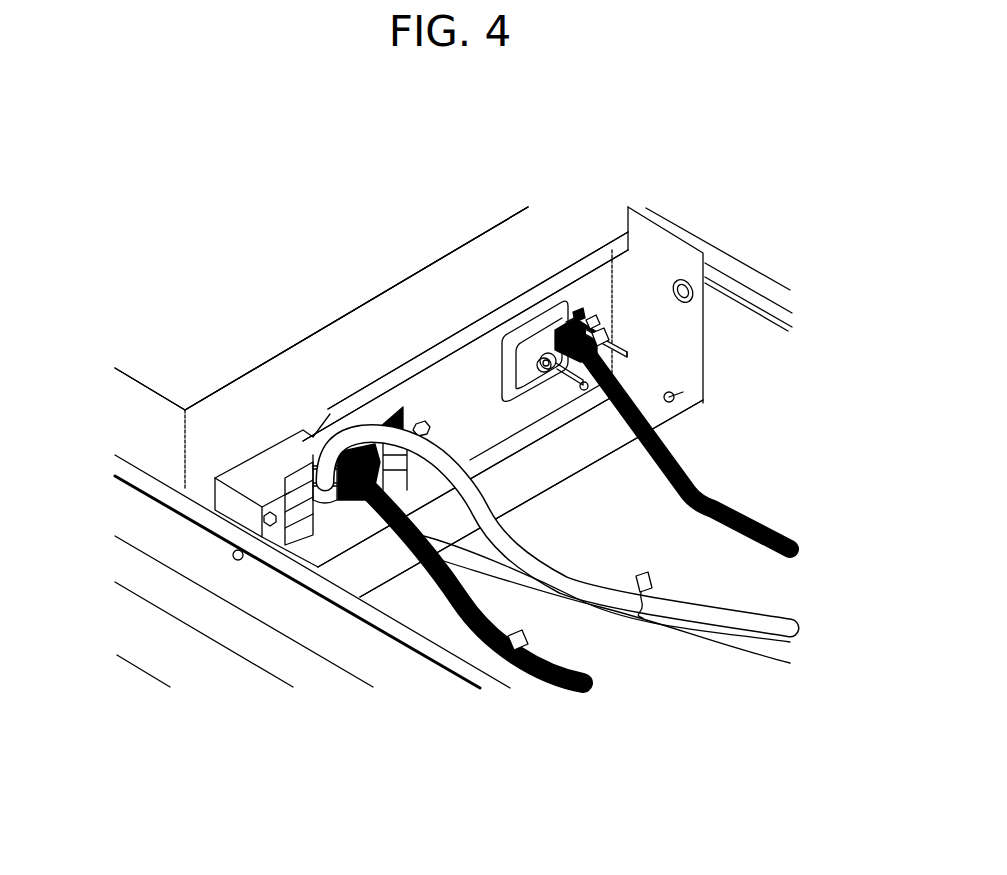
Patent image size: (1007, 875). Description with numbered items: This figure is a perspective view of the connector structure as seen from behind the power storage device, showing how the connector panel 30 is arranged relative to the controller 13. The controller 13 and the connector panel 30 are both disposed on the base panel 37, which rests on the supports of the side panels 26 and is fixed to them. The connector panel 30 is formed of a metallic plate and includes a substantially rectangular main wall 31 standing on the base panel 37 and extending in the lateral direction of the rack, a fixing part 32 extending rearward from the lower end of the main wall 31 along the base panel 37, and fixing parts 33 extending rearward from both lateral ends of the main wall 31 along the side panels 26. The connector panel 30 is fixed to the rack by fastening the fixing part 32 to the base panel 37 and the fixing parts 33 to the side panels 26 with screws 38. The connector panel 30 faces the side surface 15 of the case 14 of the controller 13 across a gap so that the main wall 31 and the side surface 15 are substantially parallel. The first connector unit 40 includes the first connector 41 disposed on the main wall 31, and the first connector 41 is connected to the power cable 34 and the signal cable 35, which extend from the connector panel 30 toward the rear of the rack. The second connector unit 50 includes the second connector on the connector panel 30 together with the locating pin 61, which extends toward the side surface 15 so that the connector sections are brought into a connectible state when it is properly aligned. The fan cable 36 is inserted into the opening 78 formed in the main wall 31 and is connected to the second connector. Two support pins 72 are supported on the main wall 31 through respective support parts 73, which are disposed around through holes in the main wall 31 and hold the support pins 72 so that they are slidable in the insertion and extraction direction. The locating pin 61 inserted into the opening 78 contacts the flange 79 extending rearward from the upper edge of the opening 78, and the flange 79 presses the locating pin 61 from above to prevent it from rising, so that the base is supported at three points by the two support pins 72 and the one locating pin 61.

The controller 13 is at (358, 224).
The case 14 is at (358, 224).
The side surface 15 is at (409, 313).
The side panels 26 is at (726, 268).
The connector panel 30 is at (608, 238).
The main wall 31 is at (446, 409).
The fixing part 32 is at (384, 492).
The fixing parts 33 is at (690, 337).
The power cable 34 is at (731, 640).
The signal cable 35 is at (549, 690).
The fan cable 36 is at (731, 522).
The base panel 37 is at (653, 552).
The screws 38 is at (690, 284).
The first connector unit 40 is at (245, 436).
The first connector 41 is at (347, 540).
The second connector unit 50 is at (588, 220).
The locating pin 61 is at (597, 318).
The support pins 72 is at (642, 396).
The support parts 73 is at (606, 333).
The opening 78 is at (586, 400).
The flange 79 is at (573, 318).